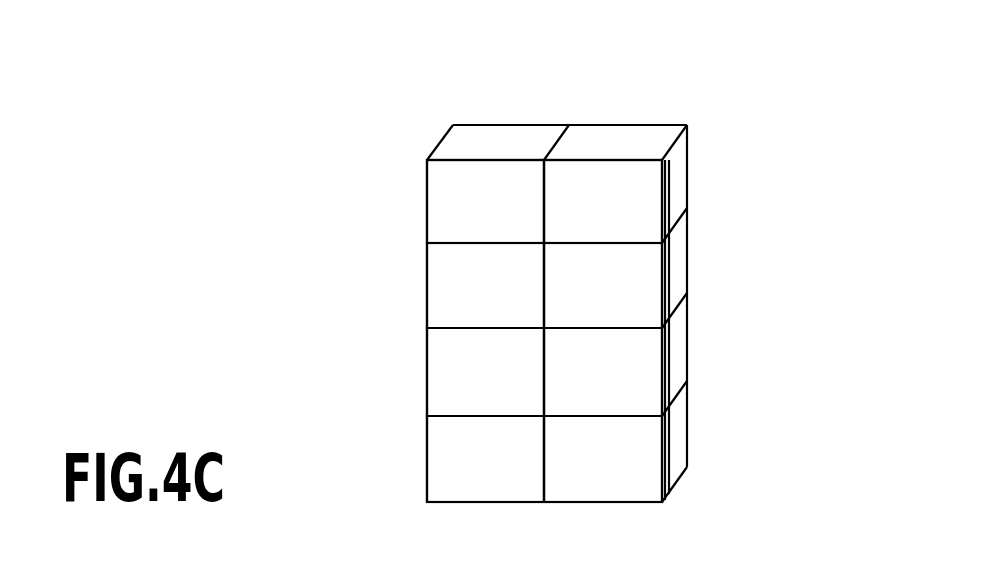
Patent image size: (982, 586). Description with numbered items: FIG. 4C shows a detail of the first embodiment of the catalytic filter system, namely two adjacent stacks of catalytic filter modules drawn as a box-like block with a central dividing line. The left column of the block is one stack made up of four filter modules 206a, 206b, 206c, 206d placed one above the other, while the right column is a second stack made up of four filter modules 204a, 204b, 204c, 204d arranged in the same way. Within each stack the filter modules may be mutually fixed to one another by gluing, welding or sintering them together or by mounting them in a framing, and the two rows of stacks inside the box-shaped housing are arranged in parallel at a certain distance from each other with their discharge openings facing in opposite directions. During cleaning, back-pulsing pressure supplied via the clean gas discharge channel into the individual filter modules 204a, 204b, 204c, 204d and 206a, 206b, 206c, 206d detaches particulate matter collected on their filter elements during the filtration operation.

The filter module 206a is at (483, 100).
The filter module 206b is at (397, 285).
The filter module 206c is at (404, 372).
The filter module 206d is at (405, 463).
The filter module 204a is at (632, 98).
The filter module 204b is at (712, 257).
The filter module 204c is at (712, 349).
The filter module 204d is at (712, 440).